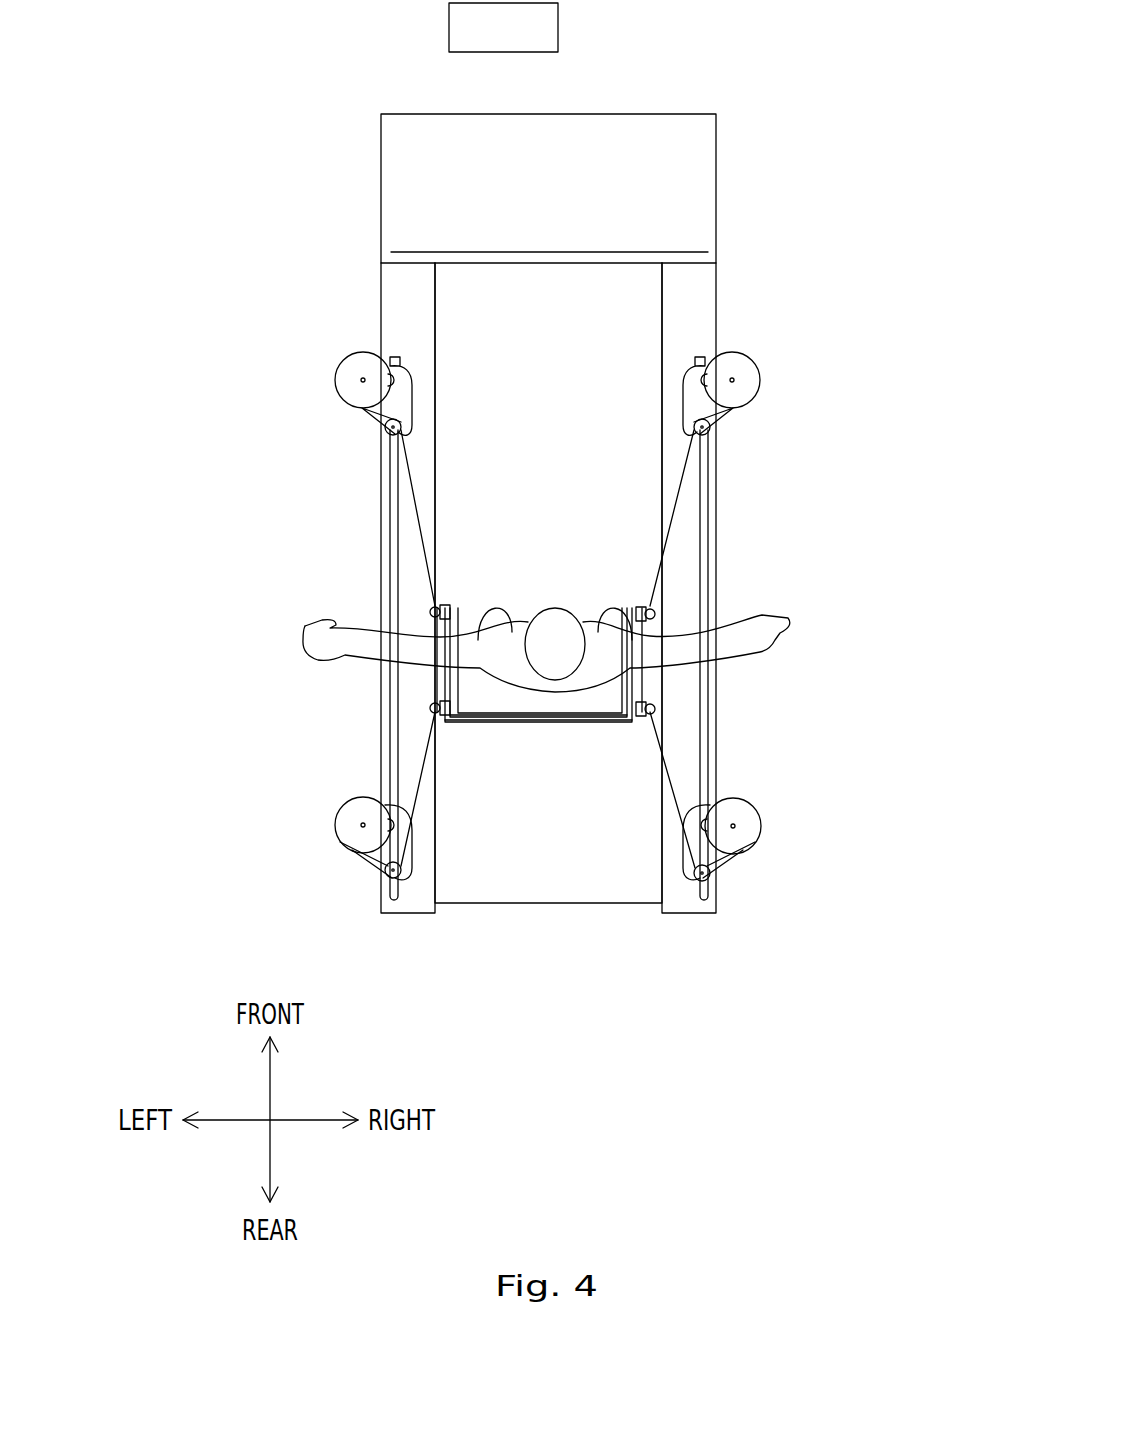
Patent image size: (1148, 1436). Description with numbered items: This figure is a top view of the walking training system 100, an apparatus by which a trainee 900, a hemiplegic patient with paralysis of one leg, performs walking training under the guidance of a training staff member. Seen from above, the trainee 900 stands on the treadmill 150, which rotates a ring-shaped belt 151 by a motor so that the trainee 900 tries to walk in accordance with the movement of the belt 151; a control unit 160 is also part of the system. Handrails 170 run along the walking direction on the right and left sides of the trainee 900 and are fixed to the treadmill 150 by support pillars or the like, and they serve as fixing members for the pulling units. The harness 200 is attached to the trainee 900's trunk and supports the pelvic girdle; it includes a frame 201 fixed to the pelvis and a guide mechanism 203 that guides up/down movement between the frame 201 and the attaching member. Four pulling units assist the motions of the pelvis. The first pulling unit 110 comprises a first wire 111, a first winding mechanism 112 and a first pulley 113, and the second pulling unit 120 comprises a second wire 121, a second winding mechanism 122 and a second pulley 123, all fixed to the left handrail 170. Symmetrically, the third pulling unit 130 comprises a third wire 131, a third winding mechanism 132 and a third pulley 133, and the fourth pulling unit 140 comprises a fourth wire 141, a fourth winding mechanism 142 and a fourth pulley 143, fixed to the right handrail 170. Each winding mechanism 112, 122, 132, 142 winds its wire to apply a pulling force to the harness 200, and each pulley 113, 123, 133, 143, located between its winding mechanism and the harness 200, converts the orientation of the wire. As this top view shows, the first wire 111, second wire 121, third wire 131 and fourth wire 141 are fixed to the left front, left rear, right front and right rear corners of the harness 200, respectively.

The walking training system 100 is at (173, 57).
The first pulling unit 110 is at (347, 445).
The first wire 111 is at (420, 518).
The first winding mechanism 112 is at (335, 380).
The first pulley 113 is at (385, 430).
The second pulling unit 120 is at (325, 811).
The second wire 121 is at (418, 760).
The second winding mechanism 122 is at (335, 825).
The second pulley 123 is at (385, 875).
The third pulling unit 130 is at (748, 455).
The third wire 131 is at (673, 508).
The third winding mechanism 132 is at (760, 370).
The third pulley 133 is at (708, 420).
The fourth pulling unit 140 is at (766, 810).
The fourth wire 141 is at (683, 745).
The fourth winding mechanism 142 is at (763, 825).
The fourth pulley 143 is at (708, 882).
The treadmill 150 is at (700, 192).
The belt 151 is at (652, 296).
The control unit 160 is at (558, 28).
The handrails 170 is at (393, 572).
The harness 200 is at (540, 753).
The frame 201 is at (456, 604).
The guide mechanism 203 is at (607, 722).
The trainee 900 is at (568, 612).